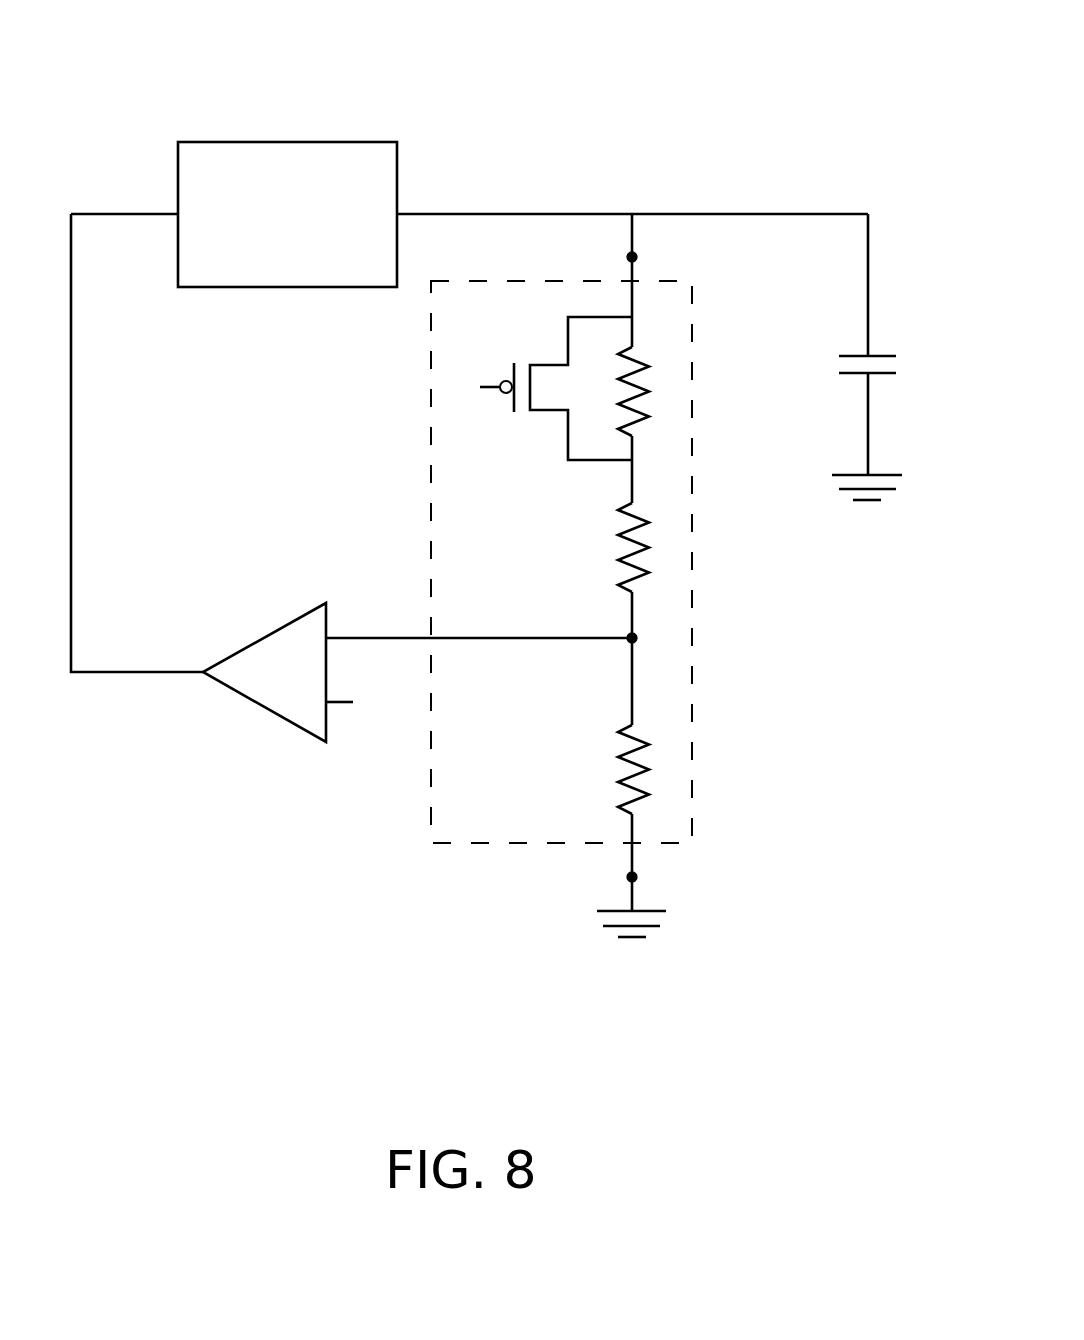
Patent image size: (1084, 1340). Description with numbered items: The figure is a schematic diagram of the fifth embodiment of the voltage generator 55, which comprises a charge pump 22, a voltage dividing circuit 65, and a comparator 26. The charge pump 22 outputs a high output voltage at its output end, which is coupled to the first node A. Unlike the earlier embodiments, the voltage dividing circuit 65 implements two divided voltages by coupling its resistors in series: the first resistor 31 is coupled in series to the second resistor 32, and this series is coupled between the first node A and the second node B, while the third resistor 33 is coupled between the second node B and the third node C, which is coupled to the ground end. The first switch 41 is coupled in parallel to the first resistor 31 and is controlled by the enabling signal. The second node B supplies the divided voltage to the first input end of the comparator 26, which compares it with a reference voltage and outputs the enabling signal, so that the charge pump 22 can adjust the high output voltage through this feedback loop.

The voltage generator 55 is at (753, 76).
The charge pump 22 is at (370, 142).
The comparator 26 is at (266, 636).
The voltage dividing circuit 65 is at (685, 281).
The first switch 41 is at (514, 418).
The first resistor 31 is at (658, 382).
The second resistor 32 is at (660, 540).
The third resistor 33 is at (658, 762).